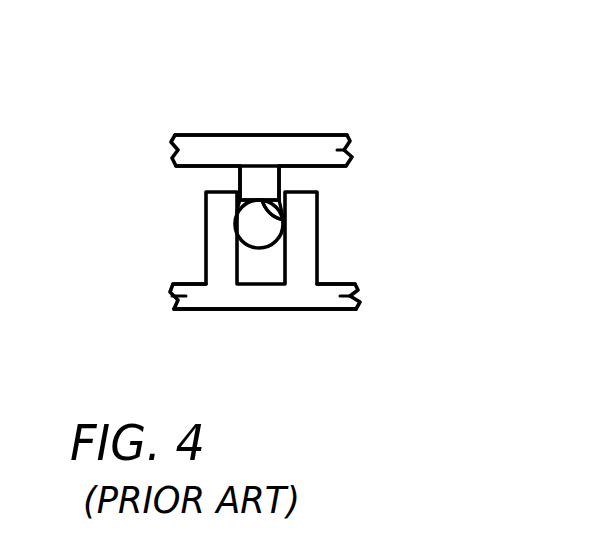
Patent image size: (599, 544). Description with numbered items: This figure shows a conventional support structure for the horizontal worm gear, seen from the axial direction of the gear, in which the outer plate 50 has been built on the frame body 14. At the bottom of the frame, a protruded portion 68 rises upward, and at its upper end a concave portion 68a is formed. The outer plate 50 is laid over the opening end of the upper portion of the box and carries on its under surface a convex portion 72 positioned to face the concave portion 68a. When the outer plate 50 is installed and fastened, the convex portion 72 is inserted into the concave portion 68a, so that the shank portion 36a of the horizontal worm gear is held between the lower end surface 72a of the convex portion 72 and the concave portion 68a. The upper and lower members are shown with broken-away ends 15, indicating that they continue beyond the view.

The outer plate 50 is at (257, 152).
The convex portion 72 is at (258, 180).
The rail/beam 15 is at (349, 151).
The protruded portion 68 is at (232, 257).
The frame body 14 is at (173, 295).
The concave portion 68a is at (264, 246).
The lower end surface 72a is at (284, 216).
The shank portion 36a is at (252, 218).